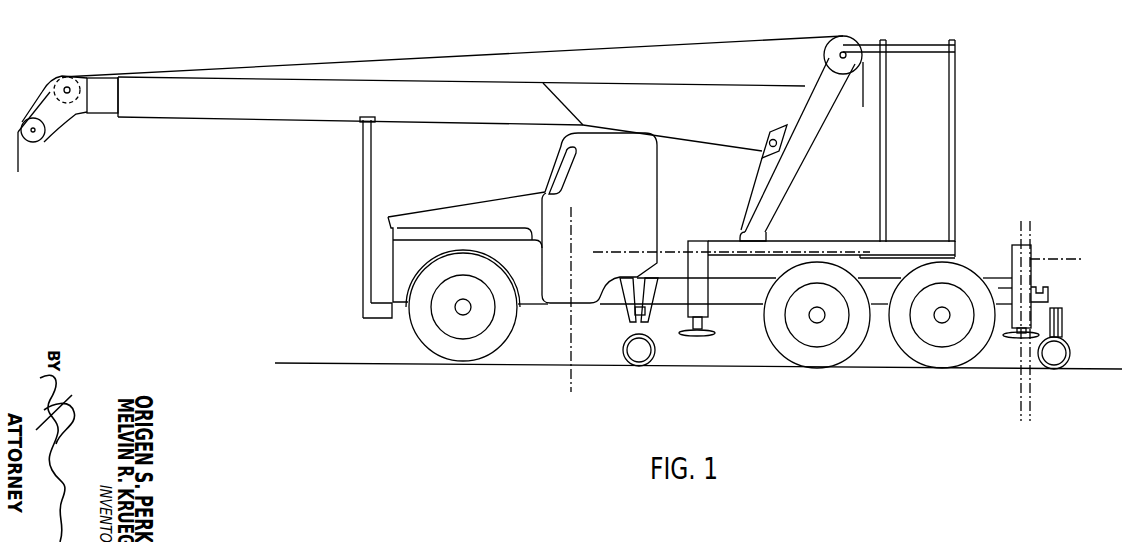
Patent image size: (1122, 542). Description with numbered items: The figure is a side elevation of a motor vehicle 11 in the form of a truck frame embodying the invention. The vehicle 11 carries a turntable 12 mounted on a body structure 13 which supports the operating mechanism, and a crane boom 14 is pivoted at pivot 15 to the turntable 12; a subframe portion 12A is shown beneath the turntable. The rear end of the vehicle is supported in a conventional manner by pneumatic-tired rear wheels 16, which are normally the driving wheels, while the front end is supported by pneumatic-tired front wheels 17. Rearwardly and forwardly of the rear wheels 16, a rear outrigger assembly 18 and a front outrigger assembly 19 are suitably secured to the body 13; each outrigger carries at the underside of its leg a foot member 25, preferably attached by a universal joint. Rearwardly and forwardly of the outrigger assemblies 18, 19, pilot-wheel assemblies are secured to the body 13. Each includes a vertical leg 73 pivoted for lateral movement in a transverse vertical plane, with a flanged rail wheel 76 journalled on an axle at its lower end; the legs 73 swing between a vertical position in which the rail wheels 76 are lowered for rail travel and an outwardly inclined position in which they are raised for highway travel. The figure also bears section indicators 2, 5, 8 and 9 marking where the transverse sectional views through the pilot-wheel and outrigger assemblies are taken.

The vehicle 11 is at (480, 212).
The turntable 12 is at (814, 250).
The bed subframe 12A is at (860, 258).
The body structure 13 is at (990, 272).
The crane boom 14 is at (245, 110).
The pivot 15 is at (768, 141).
The rear pneumatic-tired wheels 16 is at (905, 345).
The front pneumatic-tired wheels 17 is at (422, 343).
The rear outrigger assembly 18 is at (1028, 252).
The front outrigger assembly 19 is at (705, 312).
The foot member 25 is at (700, 337).
The vertical leg 73 is at (643, 327).
The flanged rail wheel 76 is at (623, 353).
The section line 5- 5 is at (632, 207).
The section line 9- 9 is at (593, 252).
The section line 8- 8 is at (974, 221).
The section line 2- 2 is at (1089, 221).